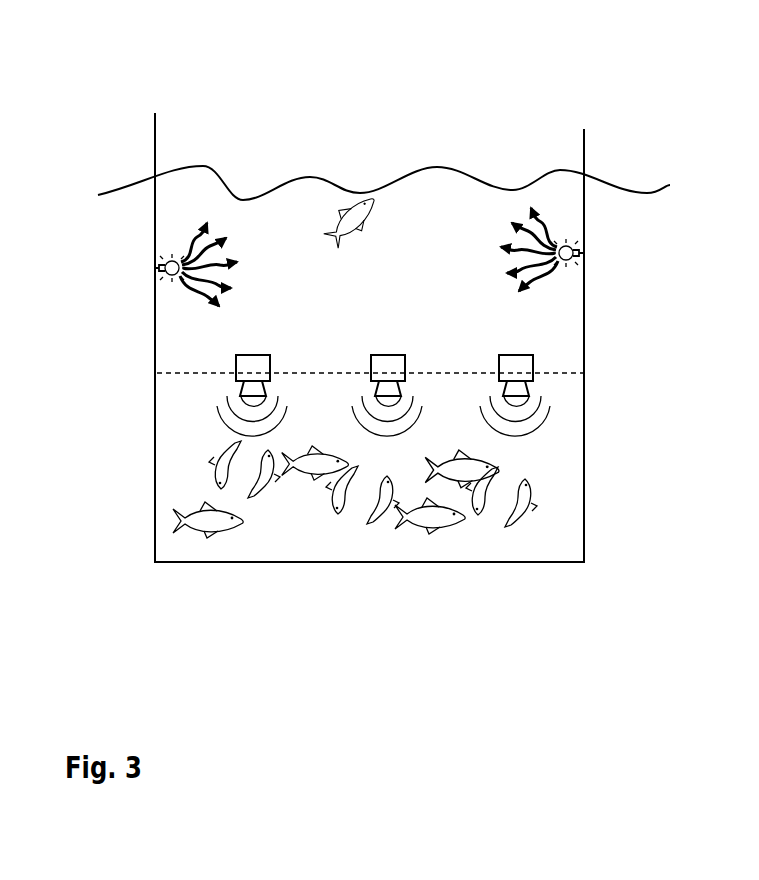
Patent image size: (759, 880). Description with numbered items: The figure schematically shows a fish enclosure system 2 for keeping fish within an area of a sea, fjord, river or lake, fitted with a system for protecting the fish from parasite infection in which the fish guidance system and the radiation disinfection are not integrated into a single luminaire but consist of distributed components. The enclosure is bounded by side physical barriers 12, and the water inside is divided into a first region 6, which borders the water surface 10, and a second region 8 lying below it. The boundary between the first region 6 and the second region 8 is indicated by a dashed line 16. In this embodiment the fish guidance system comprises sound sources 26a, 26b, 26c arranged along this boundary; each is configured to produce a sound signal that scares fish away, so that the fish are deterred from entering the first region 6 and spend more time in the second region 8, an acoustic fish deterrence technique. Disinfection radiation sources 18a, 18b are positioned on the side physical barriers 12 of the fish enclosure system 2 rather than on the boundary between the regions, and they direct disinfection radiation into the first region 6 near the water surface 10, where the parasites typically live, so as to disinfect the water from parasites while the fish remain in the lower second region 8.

The fish enclosure system 2 is at (320, 58).
The physical barrier 12 is at (155, 133).
The water surface 10 is at (312, 178).
The first region 6 is at (170, 207).
The second region 8 is at (170, 395).
The dashed line 16 is at (560, 373).
The disinfection radiation source 18a is at (168, 281).
The disinfection radiation source 18b is at (584, 255).
The sound source 26a is at (258, 362).
The sound source 26b is at (394, 366).
The sound source 26c is at (510, 364).